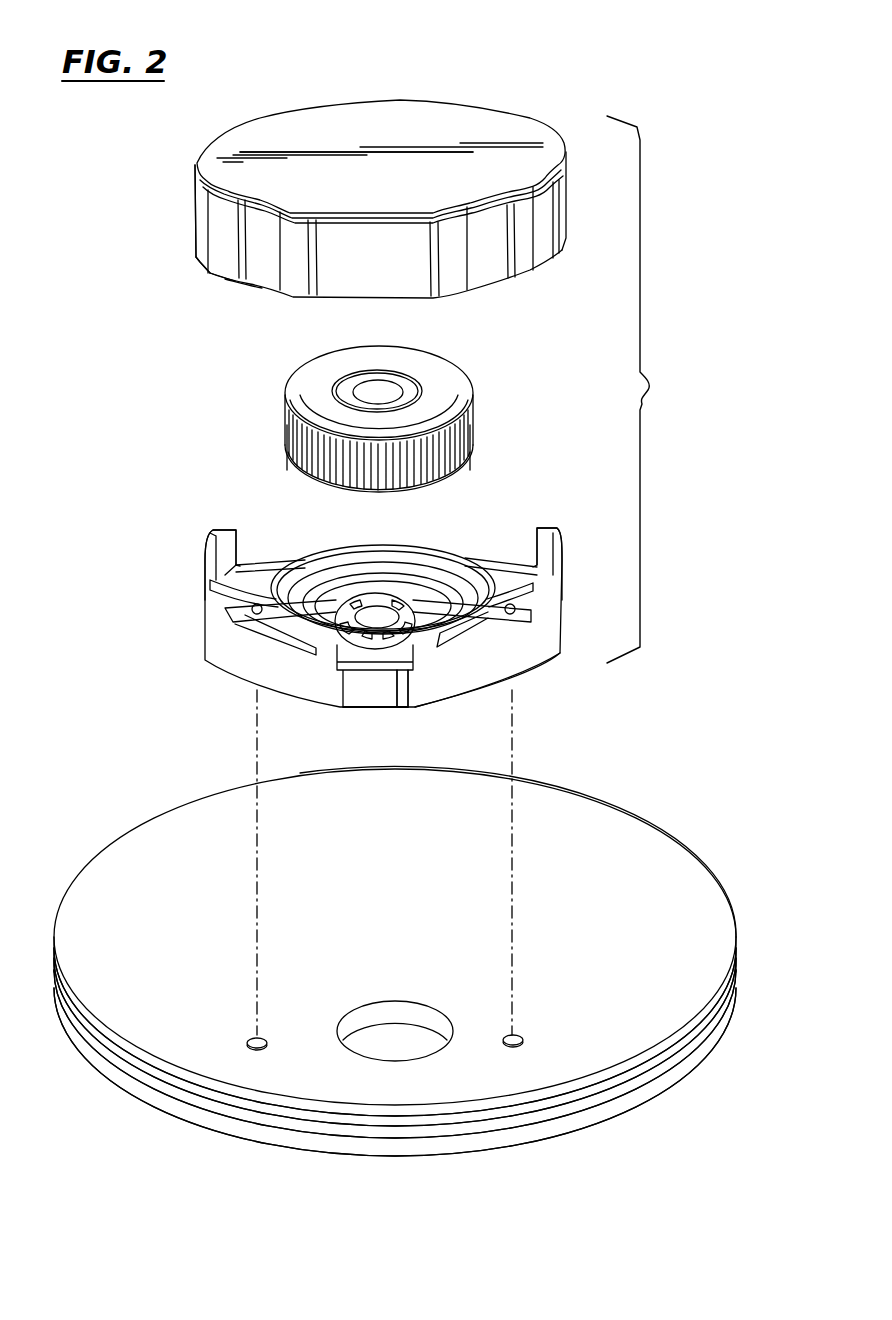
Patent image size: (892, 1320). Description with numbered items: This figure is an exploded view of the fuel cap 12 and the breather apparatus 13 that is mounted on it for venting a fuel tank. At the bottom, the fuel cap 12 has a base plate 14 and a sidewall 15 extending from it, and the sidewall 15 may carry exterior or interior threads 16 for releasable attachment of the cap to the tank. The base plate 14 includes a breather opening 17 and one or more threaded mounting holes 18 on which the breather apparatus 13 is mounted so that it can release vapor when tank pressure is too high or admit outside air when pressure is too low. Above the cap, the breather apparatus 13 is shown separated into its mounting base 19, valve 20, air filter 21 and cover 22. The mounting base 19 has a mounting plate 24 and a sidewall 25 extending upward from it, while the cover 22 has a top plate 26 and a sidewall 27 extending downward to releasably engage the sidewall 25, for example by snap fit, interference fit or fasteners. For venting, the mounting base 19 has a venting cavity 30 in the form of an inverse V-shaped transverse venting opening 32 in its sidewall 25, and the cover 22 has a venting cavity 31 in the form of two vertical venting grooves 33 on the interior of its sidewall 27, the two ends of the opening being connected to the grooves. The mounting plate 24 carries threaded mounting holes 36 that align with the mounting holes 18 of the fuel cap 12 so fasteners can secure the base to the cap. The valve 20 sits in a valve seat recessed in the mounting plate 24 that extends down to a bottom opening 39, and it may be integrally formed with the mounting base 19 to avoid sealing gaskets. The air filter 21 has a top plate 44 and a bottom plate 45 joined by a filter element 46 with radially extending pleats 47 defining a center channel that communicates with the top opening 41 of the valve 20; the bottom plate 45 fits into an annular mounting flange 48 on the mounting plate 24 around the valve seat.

The fuel cap 12 is at (668, 800).
The breather apparatus 13 is at (648, 390).
The base plate 14 is at (692, 960).
The sidewall 15 is at (673, 1047).
The threads 16 is at (610, 1093).
The breather opening 17 is at (382, 1047).
The threaded mounting holes 18 is at (257, 1051).
The mounting base 19 is at (563, 620).
The valve 20 is at (390, 640).
The air filter 21 is at (463, 400).
The cover 22 is at (468, 108).
The mounting plate 24 is at (398, 707).
The sidewall 25 is at (215, 585).
The top plate 26 is at (283, 130).
The sidewall 27 is at (194, 186).
The venting cavity 30 is at (226, 632).
The venting cavity 31 is at (212, 276).
The transverse venting opening 32 is at (467, 620).
The venting groove 33 is at (226, 282).
The threaded mounting holes 36 is at (260, 603).
The bottom opening 39 is at (355, 708).
The top opening 41 is at (324, 567).
The top plate 44 is at (408, 357).
The bottom plate 45 is at (462, 452).
The filter element 46 is at (290, 440).
The pleats 47 is at (420, 466).
The annular mounting flange 48 is at (376, 620).